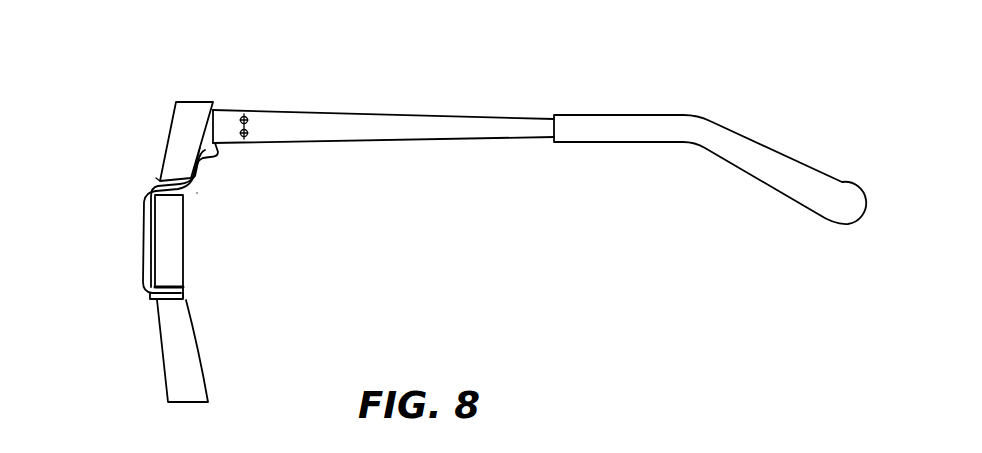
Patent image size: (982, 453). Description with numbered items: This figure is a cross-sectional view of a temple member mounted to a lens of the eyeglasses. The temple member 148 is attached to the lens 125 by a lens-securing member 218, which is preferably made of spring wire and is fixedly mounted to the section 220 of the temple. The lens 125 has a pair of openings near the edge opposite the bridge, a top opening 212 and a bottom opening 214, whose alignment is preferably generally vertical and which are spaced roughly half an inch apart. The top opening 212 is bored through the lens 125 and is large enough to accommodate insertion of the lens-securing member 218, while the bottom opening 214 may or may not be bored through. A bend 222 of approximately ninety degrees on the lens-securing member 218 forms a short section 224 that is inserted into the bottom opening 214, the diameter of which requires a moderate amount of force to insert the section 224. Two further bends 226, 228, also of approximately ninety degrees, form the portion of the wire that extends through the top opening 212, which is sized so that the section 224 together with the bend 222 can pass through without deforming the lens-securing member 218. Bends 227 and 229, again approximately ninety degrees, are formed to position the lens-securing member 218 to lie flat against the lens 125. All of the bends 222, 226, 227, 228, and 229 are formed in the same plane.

The lens 125 is at (192, 102).
The temple member 148 is at (375, 116).
The top opening 212 is at (157, 177).
The bottom opening 214 is at (185, 292).
The lens-securing member 218 is at (145, 220).
The section 220 is at (223, 123).
The bend 222 is at (146, 294).
The section 224 is at (167, 303).
The bend 226 is at (147, 190).
The bend 227 is at (203, 177).
The bend 228 is at (197, 193).
The bend 229 is at (207, 144).